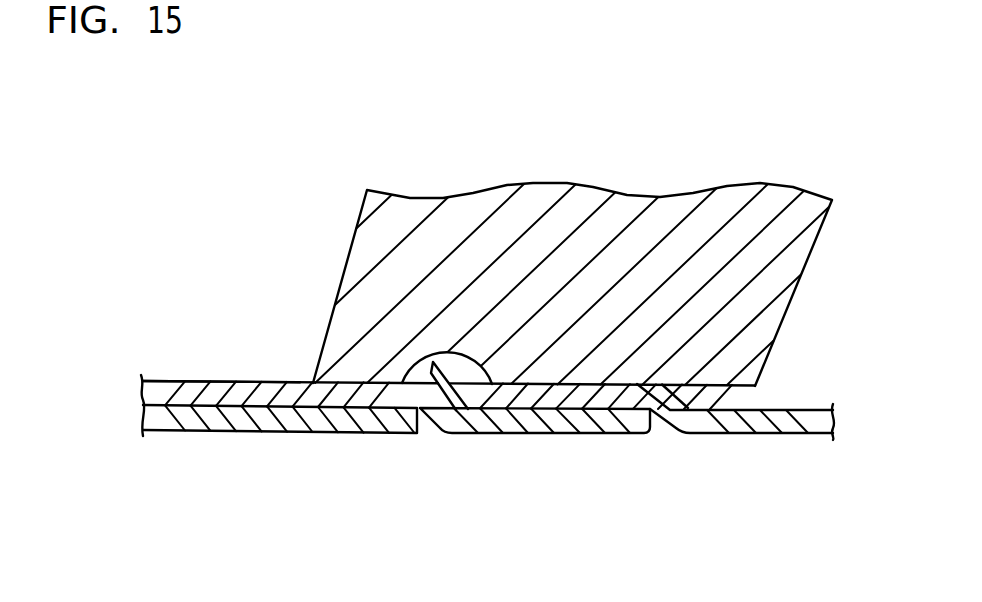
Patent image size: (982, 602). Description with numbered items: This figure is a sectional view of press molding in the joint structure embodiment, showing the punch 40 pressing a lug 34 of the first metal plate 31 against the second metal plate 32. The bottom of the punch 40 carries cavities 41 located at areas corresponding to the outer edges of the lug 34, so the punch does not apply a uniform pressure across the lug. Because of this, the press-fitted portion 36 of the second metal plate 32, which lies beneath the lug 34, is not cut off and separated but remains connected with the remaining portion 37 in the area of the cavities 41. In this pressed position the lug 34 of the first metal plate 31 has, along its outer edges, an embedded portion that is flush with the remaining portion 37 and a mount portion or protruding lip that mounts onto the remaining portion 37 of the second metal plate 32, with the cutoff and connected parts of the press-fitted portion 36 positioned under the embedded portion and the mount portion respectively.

The punch 40 is at (603, 284).
The cavities 41 is at (435, 350).
The second metal plate 32 is at (250, 375).
The remaining portion 37 is at (165, 381).
The first metal plate 31 is at (270, 432).
The press-fitted portion 36 is at (503, 424).
The lug 34 is at (610, 400).